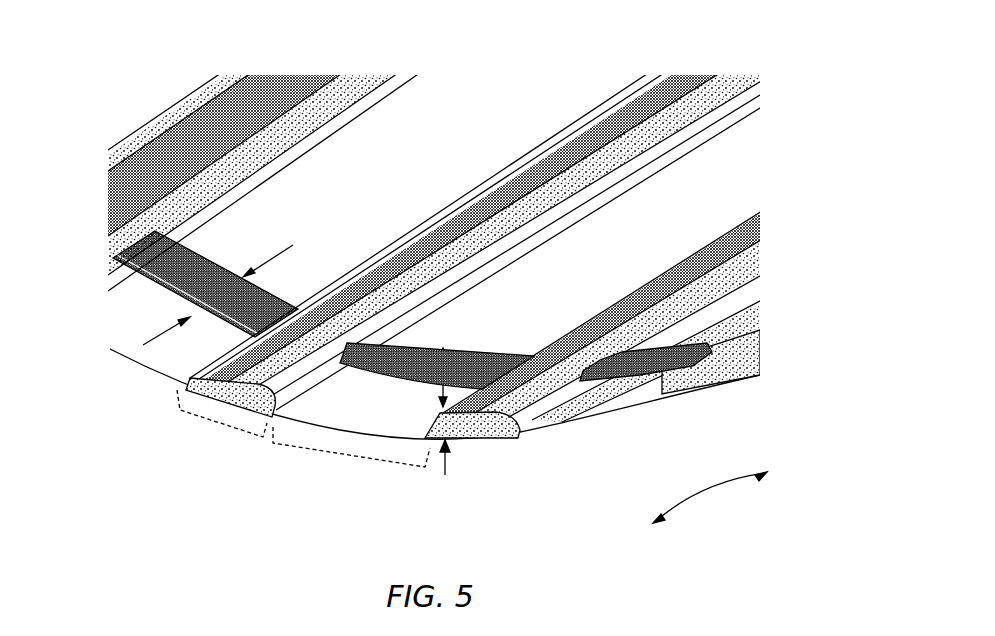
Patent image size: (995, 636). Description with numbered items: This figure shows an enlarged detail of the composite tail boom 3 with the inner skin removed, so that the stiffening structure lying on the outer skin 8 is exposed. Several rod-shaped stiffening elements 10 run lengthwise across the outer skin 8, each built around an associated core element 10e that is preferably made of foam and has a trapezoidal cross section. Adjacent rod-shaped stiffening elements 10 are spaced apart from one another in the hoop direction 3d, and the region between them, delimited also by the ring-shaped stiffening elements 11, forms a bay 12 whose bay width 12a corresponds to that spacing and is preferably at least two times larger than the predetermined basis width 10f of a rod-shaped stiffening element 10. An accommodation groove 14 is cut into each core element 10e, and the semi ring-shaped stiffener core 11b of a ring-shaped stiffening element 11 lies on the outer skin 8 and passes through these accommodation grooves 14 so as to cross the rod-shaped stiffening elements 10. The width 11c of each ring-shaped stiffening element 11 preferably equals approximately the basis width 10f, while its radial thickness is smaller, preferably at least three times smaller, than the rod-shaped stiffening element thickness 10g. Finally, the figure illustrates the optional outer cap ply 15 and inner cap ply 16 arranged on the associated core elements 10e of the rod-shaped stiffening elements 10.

The composite tail boom 3 is at (398, 401).
The hoop direction 3d is at (743, 487).
The outer skin 8 is at (640, 400).
The rod-shaped stiffening element 10 is at (498, 277).
The core element 10e is at (353, 82).
The predetermined basis width 10f is at (203, 423).
The rod-shaped stiffening element thickness 10g is at (445, 492).
The ring-shaped stiffening element 11 is at (165, 288).
The ring-shaped stiffener core 11b is at (207, 278).
The width of ring-shaped stiffening element 11c is at (153, 325).
The bay 12 is at (542, 269).
The bay width 12a is at (313, 452).
The accommodation groove 14 is at (356, 343).
The outer cap ply 15 is at (338, 117).
The inner cap ply 16 is at (281, 82).